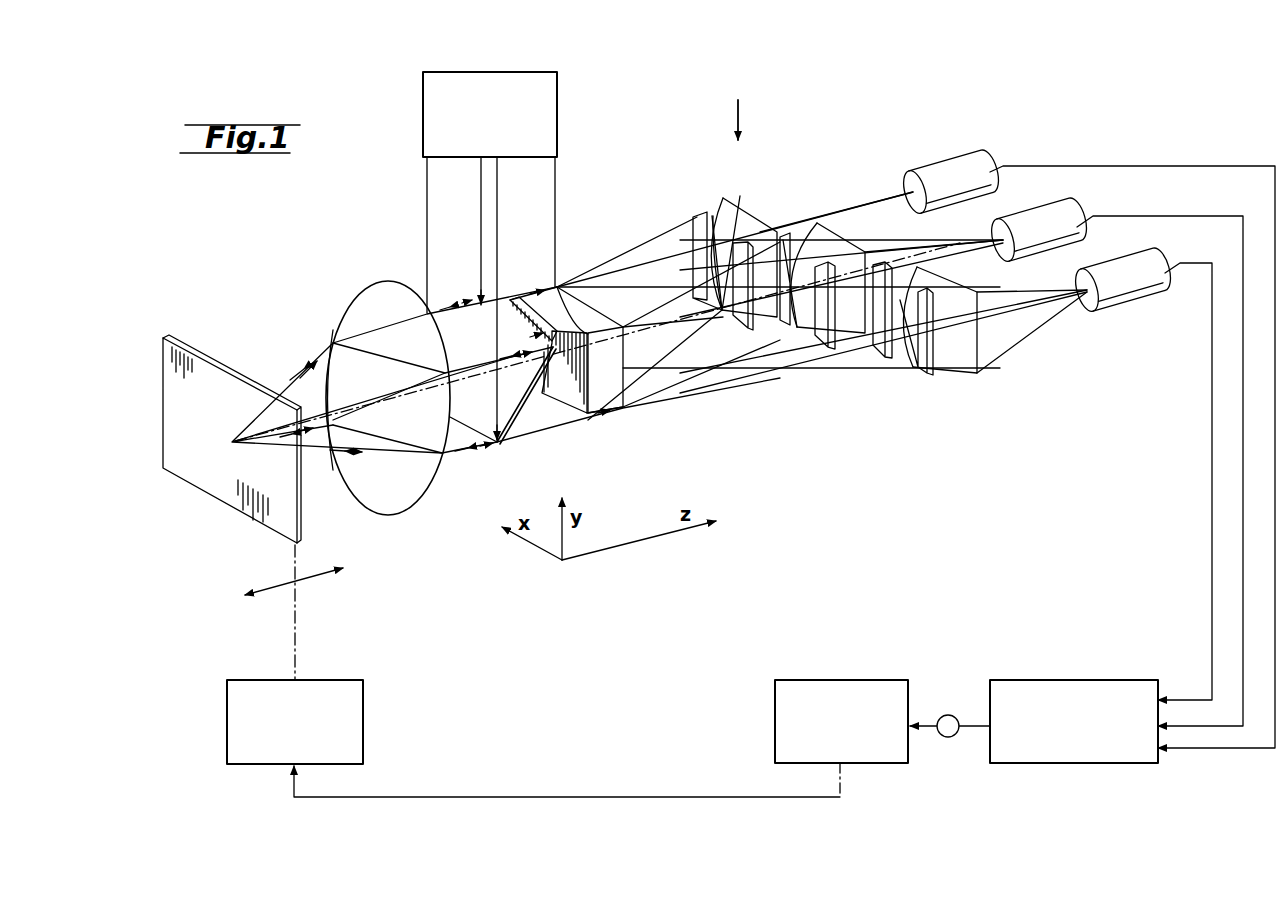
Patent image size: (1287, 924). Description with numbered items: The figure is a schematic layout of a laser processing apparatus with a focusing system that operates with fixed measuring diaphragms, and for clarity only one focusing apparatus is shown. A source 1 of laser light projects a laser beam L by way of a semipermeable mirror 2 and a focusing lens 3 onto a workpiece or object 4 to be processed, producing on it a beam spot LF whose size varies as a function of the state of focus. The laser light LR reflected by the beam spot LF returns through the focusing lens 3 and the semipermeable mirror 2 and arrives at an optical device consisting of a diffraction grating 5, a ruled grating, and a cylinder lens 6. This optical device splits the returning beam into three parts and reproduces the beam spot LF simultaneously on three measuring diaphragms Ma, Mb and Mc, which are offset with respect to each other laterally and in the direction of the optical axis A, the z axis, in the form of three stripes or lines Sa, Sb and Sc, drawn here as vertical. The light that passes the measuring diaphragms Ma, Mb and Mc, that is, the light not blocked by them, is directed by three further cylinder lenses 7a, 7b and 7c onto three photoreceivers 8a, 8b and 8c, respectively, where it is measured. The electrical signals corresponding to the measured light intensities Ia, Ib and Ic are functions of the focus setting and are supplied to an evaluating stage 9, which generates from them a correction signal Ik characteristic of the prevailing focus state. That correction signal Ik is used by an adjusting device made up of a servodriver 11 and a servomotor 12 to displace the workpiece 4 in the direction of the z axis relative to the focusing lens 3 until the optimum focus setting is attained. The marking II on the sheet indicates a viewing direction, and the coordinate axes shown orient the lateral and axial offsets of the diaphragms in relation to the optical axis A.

The source of laser light 1 is at (557, 115).
The semipermeable mirror 2 is at (477, 418).
The focusing lens 3 is at (372, 490).
The workpiece 4 is at (207, 487).
The diffraction grating 5 is at (560, 414).
The cylinder lens 6 is at (619, 410).
The further cylinder lens 7a is at (838, 222).
The further cylinder lens 7b is at (956, 350).
The further cylinder lens 7c is at (763, 207).
The photoreceiver 8a is at (1032, 217).
The photoreceiver 8b is at (1113, 267).
The photoreceiver 8c is at (937, 170).
The evaluating stage 9 is at (1079, 684).
The servodriver 11 is at (844, 684).
The servomotor 12 is at (333, 684).
The stripe Sa is at (810, 232).
The stripe Sb is at (918, 368).
The stripe Sc is at (713, 212).
The measuring diaphragm Ma is at (819, 332).
The measuring diaphragm Mb is at (886, 347).
The measuring diaphragm Mc is at (740, 316).
The laser beam L is at (566, 190).
The reflected laser light LR is at (528, 290).
The beam spot LF is at (232, 443).
The optical axis A is at (418, 392).
The light intensity Ia is at (1232, 460).
The light intensity Ib is at (1202, 473).
The light intensity Ic is at (1264, 447).
The correction signal Ik is at (950, 709).
The section view direction II is at (737, 107).